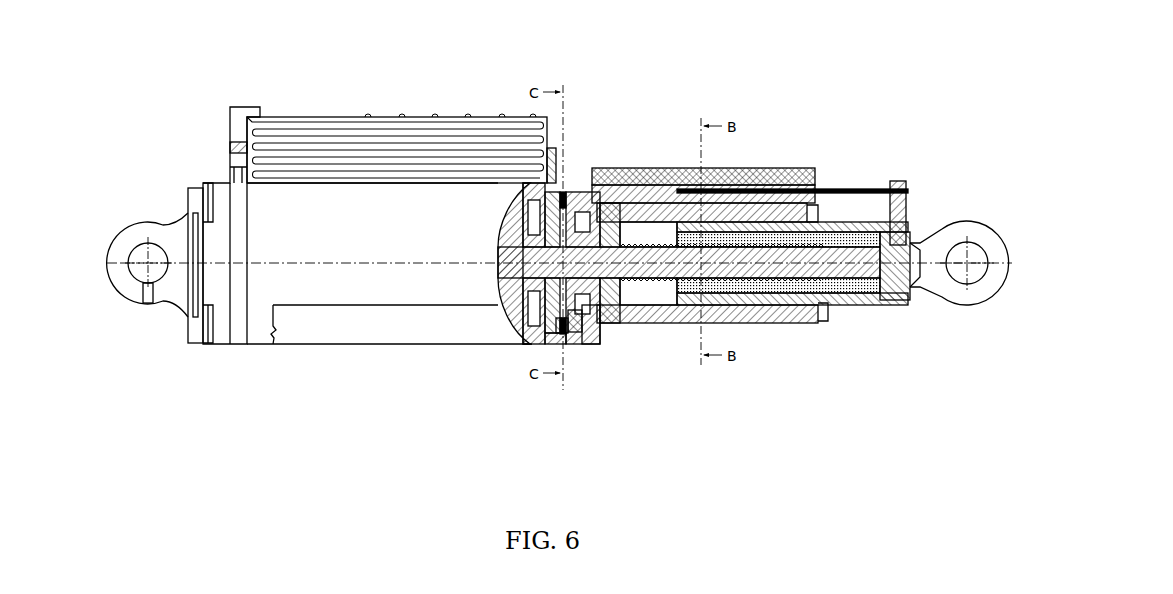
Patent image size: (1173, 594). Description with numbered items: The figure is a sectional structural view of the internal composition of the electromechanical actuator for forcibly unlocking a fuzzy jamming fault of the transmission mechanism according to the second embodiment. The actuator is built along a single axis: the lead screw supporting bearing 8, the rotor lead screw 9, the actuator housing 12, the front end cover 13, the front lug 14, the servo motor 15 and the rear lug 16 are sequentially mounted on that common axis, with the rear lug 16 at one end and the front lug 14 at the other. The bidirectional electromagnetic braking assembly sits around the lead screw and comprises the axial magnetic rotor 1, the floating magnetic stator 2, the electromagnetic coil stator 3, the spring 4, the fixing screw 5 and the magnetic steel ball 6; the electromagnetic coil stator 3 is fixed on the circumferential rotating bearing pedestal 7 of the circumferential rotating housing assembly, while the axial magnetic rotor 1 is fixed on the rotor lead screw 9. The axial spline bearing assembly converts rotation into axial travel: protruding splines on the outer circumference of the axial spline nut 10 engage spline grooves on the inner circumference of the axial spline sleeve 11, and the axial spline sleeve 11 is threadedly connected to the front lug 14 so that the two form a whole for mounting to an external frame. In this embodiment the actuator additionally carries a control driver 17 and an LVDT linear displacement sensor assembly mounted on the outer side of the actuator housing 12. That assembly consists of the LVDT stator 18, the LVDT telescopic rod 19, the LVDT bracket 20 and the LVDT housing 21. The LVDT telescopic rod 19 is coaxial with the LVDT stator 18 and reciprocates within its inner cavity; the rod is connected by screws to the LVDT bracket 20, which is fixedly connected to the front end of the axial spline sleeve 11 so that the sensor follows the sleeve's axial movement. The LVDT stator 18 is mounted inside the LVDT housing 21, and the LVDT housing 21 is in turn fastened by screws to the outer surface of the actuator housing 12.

The axial magnetic rotor 1 is at (573, 200).
The floating magnetic stator 2 is at (517, 299).
The electromagnetic coil stator 3 is at (579, 199).
The spring 4 is at (543, 375).
The fixing screw 5 is at (580, 366).
The magnetic steel ball 6 is at (601, 362).
The circumferential rotating bearing pedestal 7 is at (626, 360).
The lead screw supporting bearing 8 is at (604, 205).
The rotor lead screw 9 is at (479, 299).
The axial spline nut 10 is at (707, 309).
The axial spline sleeve 11 is at (704, 185).
The actuator housing 12 is at (641, 194).
The front end cover 13 is at (853, 310).
The front lug 14 is at (965, 318).
The servo motor 15 is at (367, 205).
The rear lug 16 is at (178, 204).
The control driver 17 is at (401, 124).
The LVDT stator 18 is at (670, 185).
The LVDT telescopic rod 19 is at (792, 129).
The LVDT bracket 20 is at (919, 155).
The LVDT housing 21 is at (703, 134).